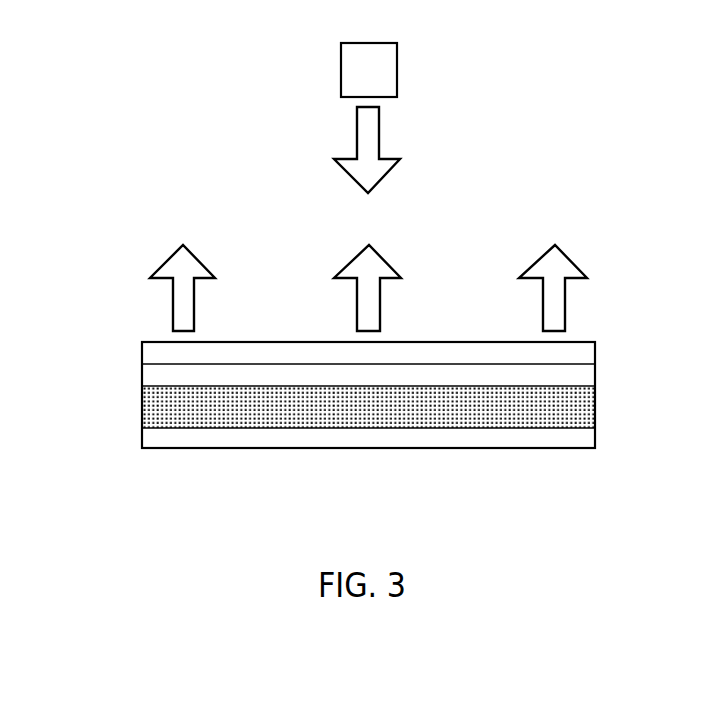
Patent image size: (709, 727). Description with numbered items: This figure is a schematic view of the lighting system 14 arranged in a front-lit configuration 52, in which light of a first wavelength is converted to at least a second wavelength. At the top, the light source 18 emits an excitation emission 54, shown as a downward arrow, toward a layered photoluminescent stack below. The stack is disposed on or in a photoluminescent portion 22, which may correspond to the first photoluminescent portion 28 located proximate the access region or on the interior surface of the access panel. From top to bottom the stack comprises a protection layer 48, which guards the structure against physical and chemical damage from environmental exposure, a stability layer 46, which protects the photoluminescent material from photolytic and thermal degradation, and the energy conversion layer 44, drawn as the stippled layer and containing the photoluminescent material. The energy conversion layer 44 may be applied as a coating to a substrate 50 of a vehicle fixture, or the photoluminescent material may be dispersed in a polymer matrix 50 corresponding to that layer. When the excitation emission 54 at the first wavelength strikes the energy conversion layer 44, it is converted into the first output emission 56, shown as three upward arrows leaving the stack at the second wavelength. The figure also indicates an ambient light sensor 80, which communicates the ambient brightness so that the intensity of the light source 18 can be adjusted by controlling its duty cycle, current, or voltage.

The lighting system 14 is at (516, 42).
The light source 18 is at (369, 70).
The photoluminescent portion 22 is at (379, 400).
The first photoluminescent portion 28 is at (606, 396).
The energy conversion layer 44 is at (148, 408).
The stability layer 46 is at (148, 374).
The protection layer 48 is at (148, 352).
The substrate 50 is at (140, 422).
The front-lit configuration 52 is at (379, 241).
The excitation emission 54 is at (378, 141).
The first output emission 56 is at (190, 265).
The ambient light sensor 80 is at (582, 437).